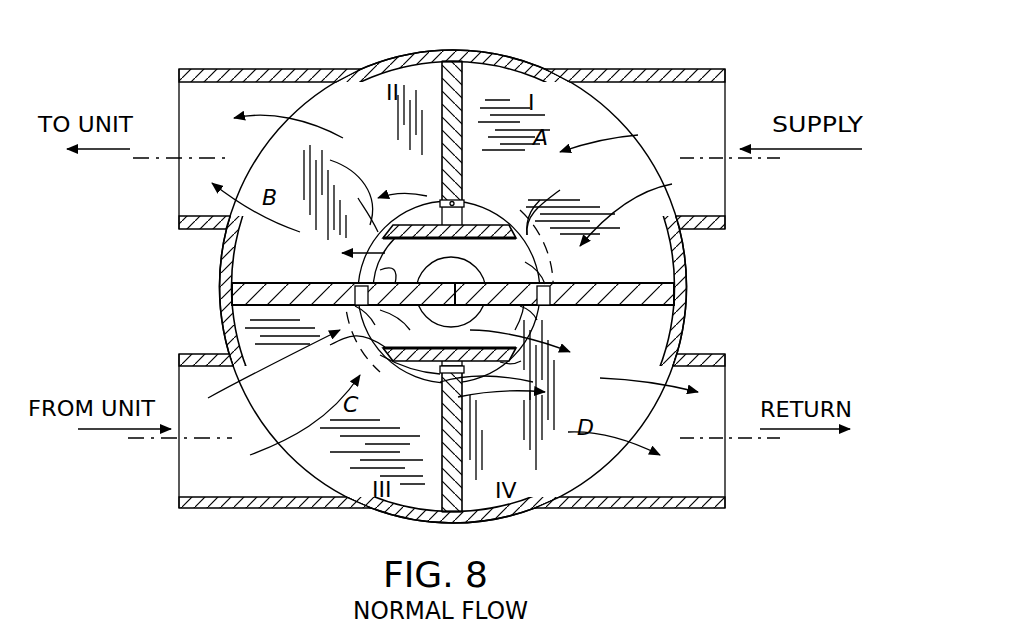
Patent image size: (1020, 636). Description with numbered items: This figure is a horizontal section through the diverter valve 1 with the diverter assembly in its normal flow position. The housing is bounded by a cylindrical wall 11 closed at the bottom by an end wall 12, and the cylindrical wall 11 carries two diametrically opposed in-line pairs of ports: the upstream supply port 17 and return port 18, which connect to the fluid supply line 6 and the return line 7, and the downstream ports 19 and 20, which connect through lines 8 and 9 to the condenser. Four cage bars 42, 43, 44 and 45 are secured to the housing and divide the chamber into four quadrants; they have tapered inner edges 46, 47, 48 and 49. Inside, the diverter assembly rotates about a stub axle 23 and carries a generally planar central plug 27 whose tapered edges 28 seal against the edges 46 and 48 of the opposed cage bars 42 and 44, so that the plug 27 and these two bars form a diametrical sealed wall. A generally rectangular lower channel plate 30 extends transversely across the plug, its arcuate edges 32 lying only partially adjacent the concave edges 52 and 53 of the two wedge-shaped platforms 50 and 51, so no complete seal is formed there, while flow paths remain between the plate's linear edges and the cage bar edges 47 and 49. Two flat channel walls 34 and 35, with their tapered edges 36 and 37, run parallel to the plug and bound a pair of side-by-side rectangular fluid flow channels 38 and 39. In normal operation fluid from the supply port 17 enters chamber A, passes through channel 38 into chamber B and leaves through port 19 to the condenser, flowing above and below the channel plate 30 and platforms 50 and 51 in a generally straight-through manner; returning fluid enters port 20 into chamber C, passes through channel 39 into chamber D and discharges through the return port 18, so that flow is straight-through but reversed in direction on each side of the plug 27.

The diverter valve 1 is at (652, 522).
The fluid supply line 6 is at (776, 163).
The return line 7 is at (762, 438).
The line 8 is at (148, 160).
The line 9 is at (138, 438).
The cylindrical wall 11 is at (507, 517).
The wall 12 is at (382, 143).
The supply port 17 is at (727, 205).
The return port 18 is at (726, 487).
The downstream port 19 is at (178, 96).
The downstream port 20 is at (178, 370).
The stub axle 23 is at (537, 313).
The central plug 27 is at (395, 284).
The tapered edges 28 is at (352, 283).
The lower channel plate 30 is at (410, 328).
The arcuate edges 32 is at (358, 222).
The channel wall 34 is at (520, 225).
The channel wall 35 is at (533, 382).
The tapered edges 36 is at (358, 198).
The tapered edges 37 is at (521, 361).
The fluid flow channel 38 is at (432, 237).
The fluid flow channel 39 is at (440, 374).
The cage bar 42 is at (660, 296).
The cage bar 43 is at (464, 62).
The cage bar 44 is at (250, 297).
The cage bar 45 is at (425, 510).
The tapered inner edge 46 is at (541, 284).
The tapered inner edge 47 is at (466, 205).
The tapered inner edge 48 is at (362, 306).
The tapered inner edge 49 is at (463, 418).
The platform 50 is at (508, 93).
The platform 51 is at (300, 415).
The concave edge 52 is at (518, 268).
The concave edge 53 is at (446, 350).